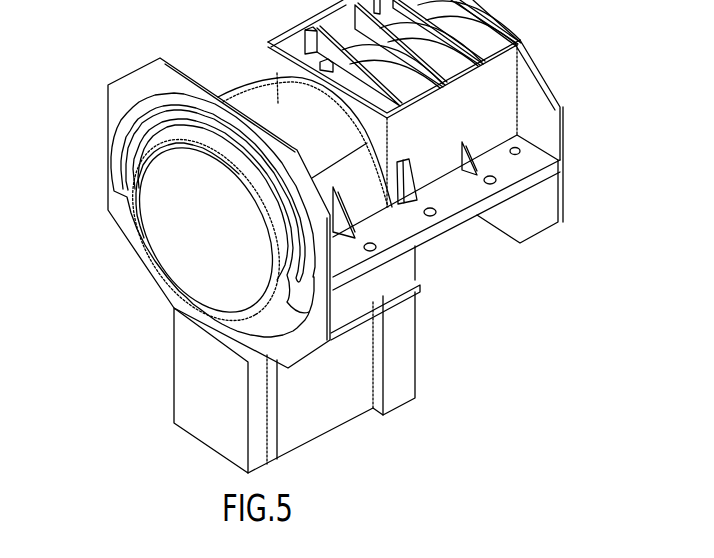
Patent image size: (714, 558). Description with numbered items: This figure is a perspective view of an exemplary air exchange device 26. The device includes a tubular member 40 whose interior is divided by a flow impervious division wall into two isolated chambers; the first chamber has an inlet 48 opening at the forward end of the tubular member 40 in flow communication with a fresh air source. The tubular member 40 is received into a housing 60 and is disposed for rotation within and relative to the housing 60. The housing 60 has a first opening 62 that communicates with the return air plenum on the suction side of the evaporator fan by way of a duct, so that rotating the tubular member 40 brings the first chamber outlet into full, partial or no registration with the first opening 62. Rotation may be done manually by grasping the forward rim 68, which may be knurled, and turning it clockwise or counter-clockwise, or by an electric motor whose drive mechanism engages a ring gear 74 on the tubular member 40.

The air exchange device 26 is at (91, 121).
The tubular member 40 is at (268, 77).
The inlet 48 is at (179, 266).
The housing 60 is at (247, 73).
The first opening 62 is at (352, 147).
The forward rim 68 is at (268, 322).
The ring gear 74 is at (400, 103).